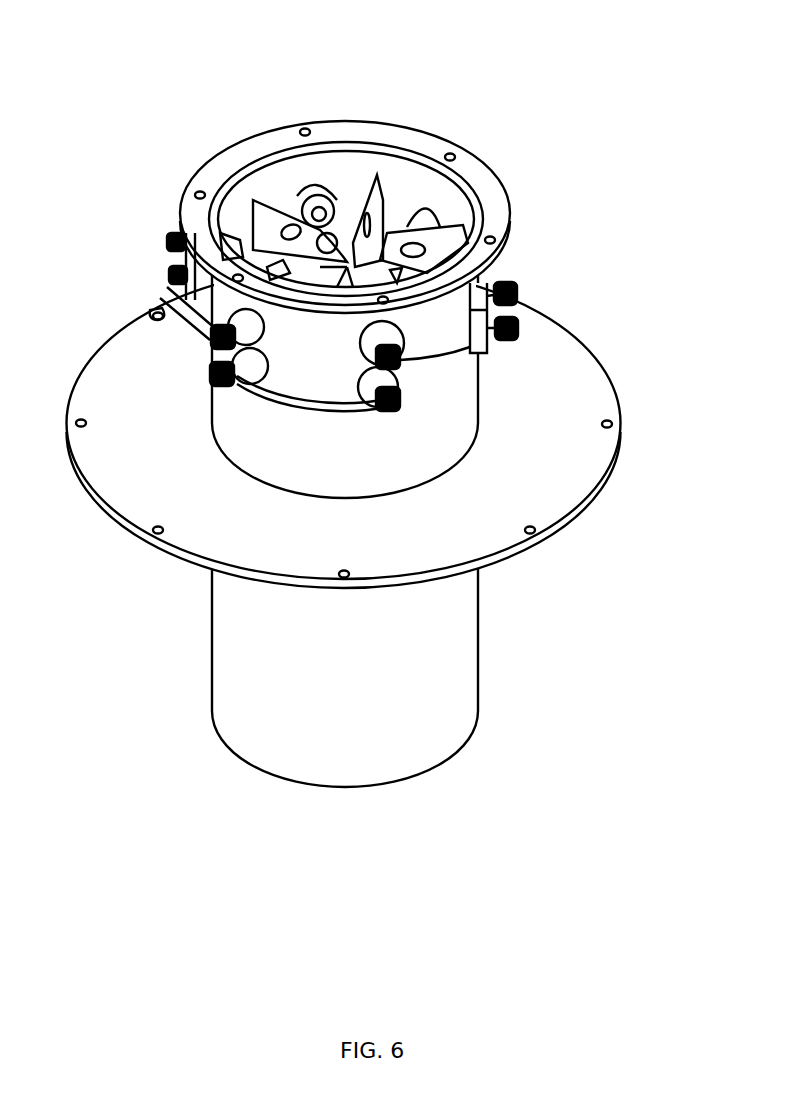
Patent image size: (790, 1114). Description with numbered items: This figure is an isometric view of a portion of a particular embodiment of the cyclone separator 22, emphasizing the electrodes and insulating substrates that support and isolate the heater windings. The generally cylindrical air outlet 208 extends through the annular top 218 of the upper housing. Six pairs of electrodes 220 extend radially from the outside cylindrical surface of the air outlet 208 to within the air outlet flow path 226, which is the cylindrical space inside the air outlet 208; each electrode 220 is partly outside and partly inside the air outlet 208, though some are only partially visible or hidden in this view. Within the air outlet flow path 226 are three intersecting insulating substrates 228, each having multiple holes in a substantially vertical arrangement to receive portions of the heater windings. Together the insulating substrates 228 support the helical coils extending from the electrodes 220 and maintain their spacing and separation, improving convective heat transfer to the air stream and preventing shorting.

The cyclone separator 22 is at (371, 408).
The air outlet 208 is at (433, 450).
The annular top 218 is at (587, 388).
The electrodes 220 is at (325, 215).
The air outlet flow path 226 is at (410, 180).
The insulating substrates 228 is at (270, 218).